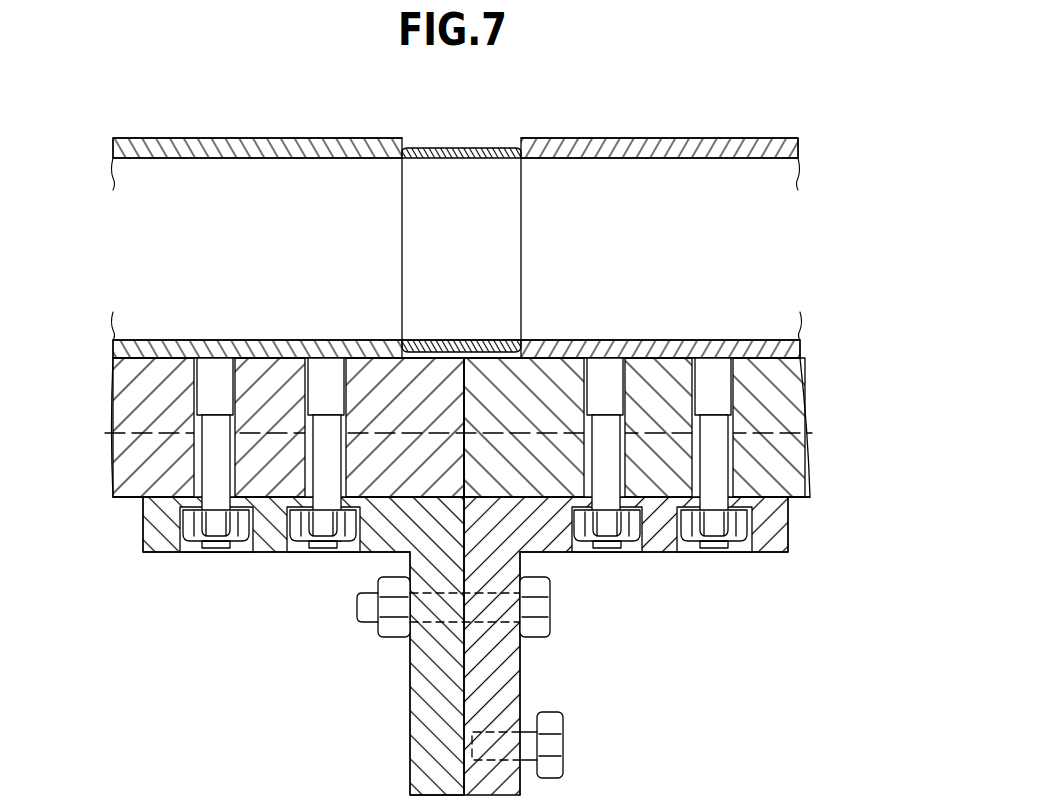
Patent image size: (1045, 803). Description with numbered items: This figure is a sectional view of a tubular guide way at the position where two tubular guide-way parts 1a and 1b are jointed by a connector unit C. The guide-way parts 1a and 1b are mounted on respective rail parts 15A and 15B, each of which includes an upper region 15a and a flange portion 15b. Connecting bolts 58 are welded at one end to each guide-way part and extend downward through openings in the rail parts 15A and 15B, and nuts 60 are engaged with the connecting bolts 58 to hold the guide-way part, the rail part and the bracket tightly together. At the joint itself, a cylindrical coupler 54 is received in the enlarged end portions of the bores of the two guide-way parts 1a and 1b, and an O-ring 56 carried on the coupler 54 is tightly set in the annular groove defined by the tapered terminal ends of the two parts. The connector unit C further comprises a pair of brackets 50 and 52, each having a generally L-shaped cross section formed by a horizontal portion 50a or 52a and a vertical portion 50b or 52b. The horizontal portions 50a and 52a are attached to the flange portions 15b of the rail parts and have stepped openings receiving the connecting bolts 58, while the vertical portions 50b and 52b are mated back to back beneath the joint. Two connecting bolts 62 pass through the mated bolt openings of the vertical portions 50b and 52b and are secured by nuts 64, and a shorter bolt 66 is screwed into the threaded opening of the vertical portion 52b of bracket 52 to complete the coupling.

The tubular guide-way part 1a is at (197, 147).
The tubular guide-way part 1b is at (703, 146).
The cylindrical coupler 54 is at (488, 152).
The O-ring 56 is at (456, 147).
The rail part 15A is at (98, 433).
The rail part 15B is at (816, 410).
The upper layer of clamp block 15a is at (787, 383).
The flange portion 15b is at (795, 450).
The connecting bolt 58 is at (210, 397).
The nut 60 is at (213, 523).
The bracket 50 is at (264, 576).
The horizontal portion 50a is at (165, 520).
The vertical portion 50b is at (430, 705).
The bracket 52 is at (663, 646).
The horizontal portion 52a is at (777, 525).
The vertical portion 52b is at (500, 688).
The connecting bolt 62 is at (542, 630).
The nut 64 is at (378, 630).
The shorter bolt 66 is at (560, 752).
The connector unit C is at (646, 620).